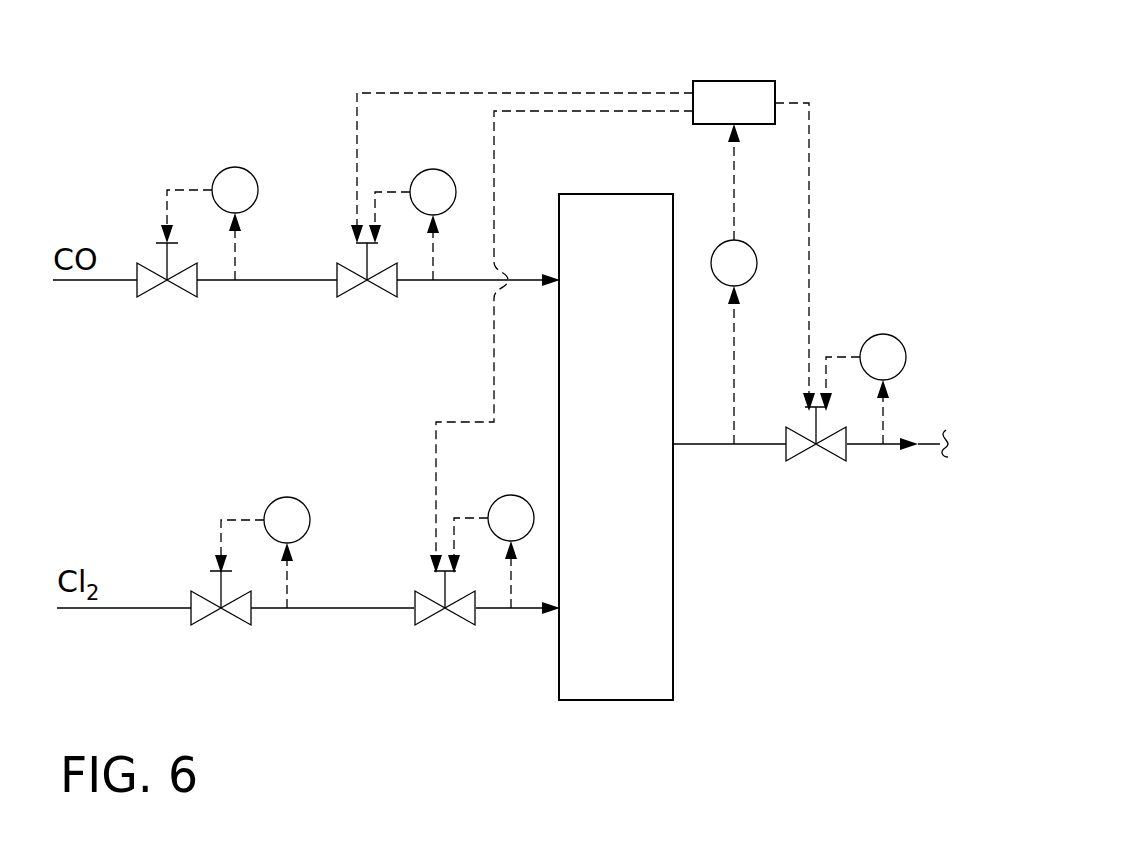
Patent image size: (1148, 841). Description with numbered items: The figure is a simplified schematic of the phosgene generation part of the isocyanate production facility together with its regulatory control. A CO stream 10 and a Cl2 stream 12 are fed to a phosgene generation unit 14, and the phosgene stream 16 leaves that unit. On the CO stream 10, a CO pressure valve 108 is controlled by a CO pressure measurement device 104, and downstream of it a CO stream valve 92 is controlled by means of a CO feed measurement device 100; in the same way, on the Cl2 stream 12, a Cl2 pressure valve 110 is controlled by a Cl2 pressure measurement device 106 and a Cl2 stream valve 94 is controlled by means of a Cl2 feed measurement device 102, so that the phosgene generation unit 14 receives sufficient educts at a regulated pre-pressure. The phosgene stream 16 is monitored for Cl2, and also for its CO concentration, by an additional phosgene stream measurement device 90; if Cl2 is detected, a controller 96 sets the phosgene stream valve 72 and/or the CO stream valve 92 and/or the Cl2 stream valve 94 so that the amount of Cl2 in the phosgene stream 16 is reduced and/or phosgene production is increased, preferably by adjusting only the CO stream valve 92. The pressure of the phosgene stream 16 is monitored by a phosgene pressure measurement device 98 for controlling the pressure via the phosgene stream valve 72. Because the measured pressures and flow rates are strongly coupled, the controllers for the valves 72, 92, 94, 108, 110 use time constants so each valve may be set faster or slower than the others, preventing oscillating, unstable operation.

The CO stream 10 is at (293, 282).
The Cl2 stream 12 is at (338, 610).
The phosgene generation unit 14 is at (598, 466).
The phosgene stream 16 is at (700, 446).
The phosgene stream valve 72 is at (805, 462).
The additional phosgene stream measurement device 90 is at (757, 240).
The CO stream valve 92 is at (387, 297).
The Cl2 stream valve 94 is at (463, 625).
The controller 96 is at (757, 80).
The phosgene pressure measurement device 98 is at (893, 335).
The CO feed measurement device 100 is at (437, 168).
The Cl2 feed measurement device 102 is at (513, 495).
The CO pressure measurement device 104 is at (233, 168).
The Cl2 pressure measurement device 106 is at (285, 497).
The CO pressure valve 108 is at (170, 297).
The Cl2 pressure valve 110 is at (193, 625).